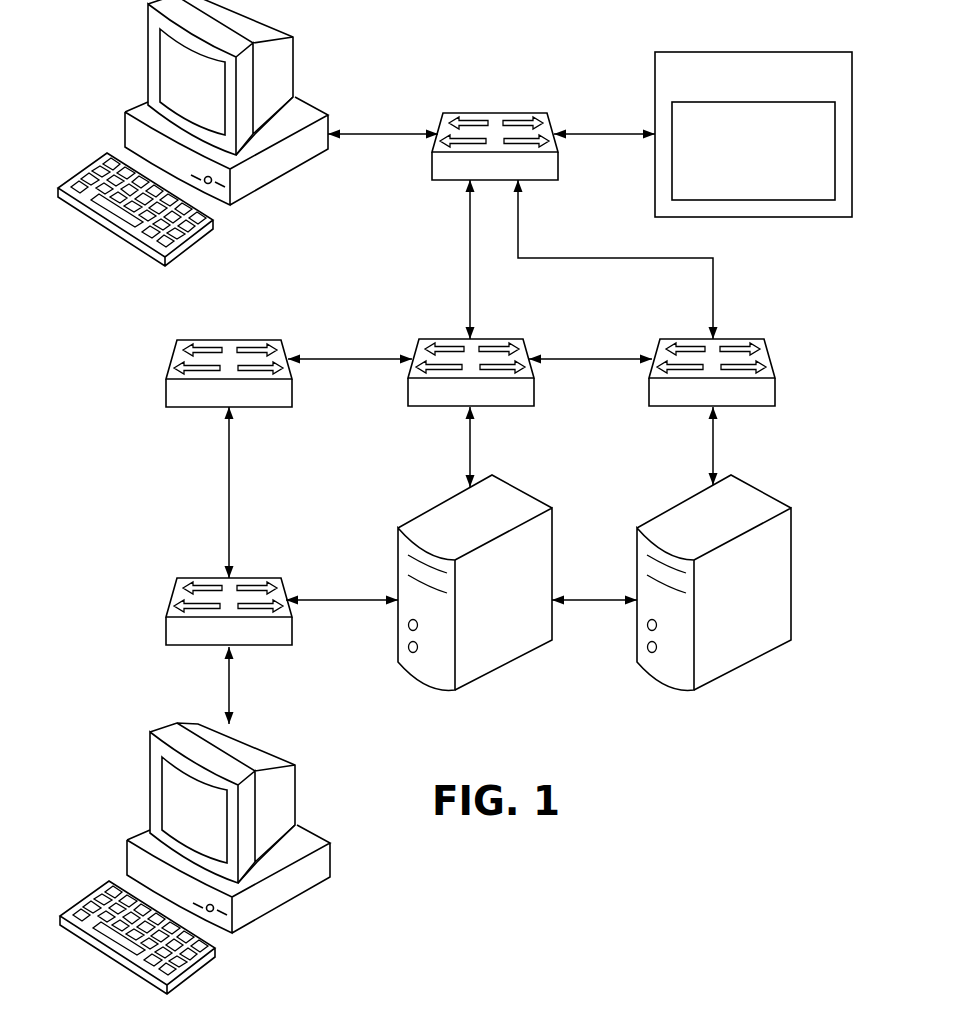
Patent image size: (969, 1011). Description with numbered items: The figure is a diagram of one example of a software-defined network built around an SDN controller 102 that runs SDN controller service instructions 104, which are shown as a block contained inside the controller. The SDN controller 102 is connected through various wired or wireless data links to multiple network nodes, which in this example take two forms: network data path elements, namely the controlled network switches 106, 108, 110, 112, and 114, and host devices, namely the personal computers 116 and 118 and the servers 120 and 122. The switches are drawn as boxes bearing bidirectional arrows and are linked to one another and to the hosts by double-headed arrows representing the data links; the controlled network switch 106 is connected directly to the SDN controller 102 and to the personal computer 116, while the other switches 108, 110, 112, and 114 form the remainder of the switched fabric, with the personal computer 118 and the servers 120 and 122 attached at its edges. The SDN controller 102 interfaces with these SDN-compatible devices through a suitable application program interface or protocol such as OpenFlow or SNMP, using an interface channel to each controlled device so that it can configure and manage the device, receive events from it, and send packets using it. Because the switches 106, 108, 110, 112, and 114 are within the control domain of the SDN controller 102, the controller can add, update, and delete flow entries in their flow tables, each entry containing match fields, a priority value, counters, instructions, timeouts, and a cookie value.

The SDN controller 102 is at (755, 52).
The SDN controller service instructions 104 is at (752, 200).
The controlled network switch 106 is at (497, 113).
The controlled network switch 108 is at (439, 339).
The controlled network switch 110 is at (771, 359).
The controlled network switch 112 is at (172, 357).
The controlled network switch 114 is at (172, 596).
The personal computer 116 is at (148, 55).
The personal computer 118 is at (150, 786).
The server 120 is at (428, 511).
The server 122 is at (667, 511).